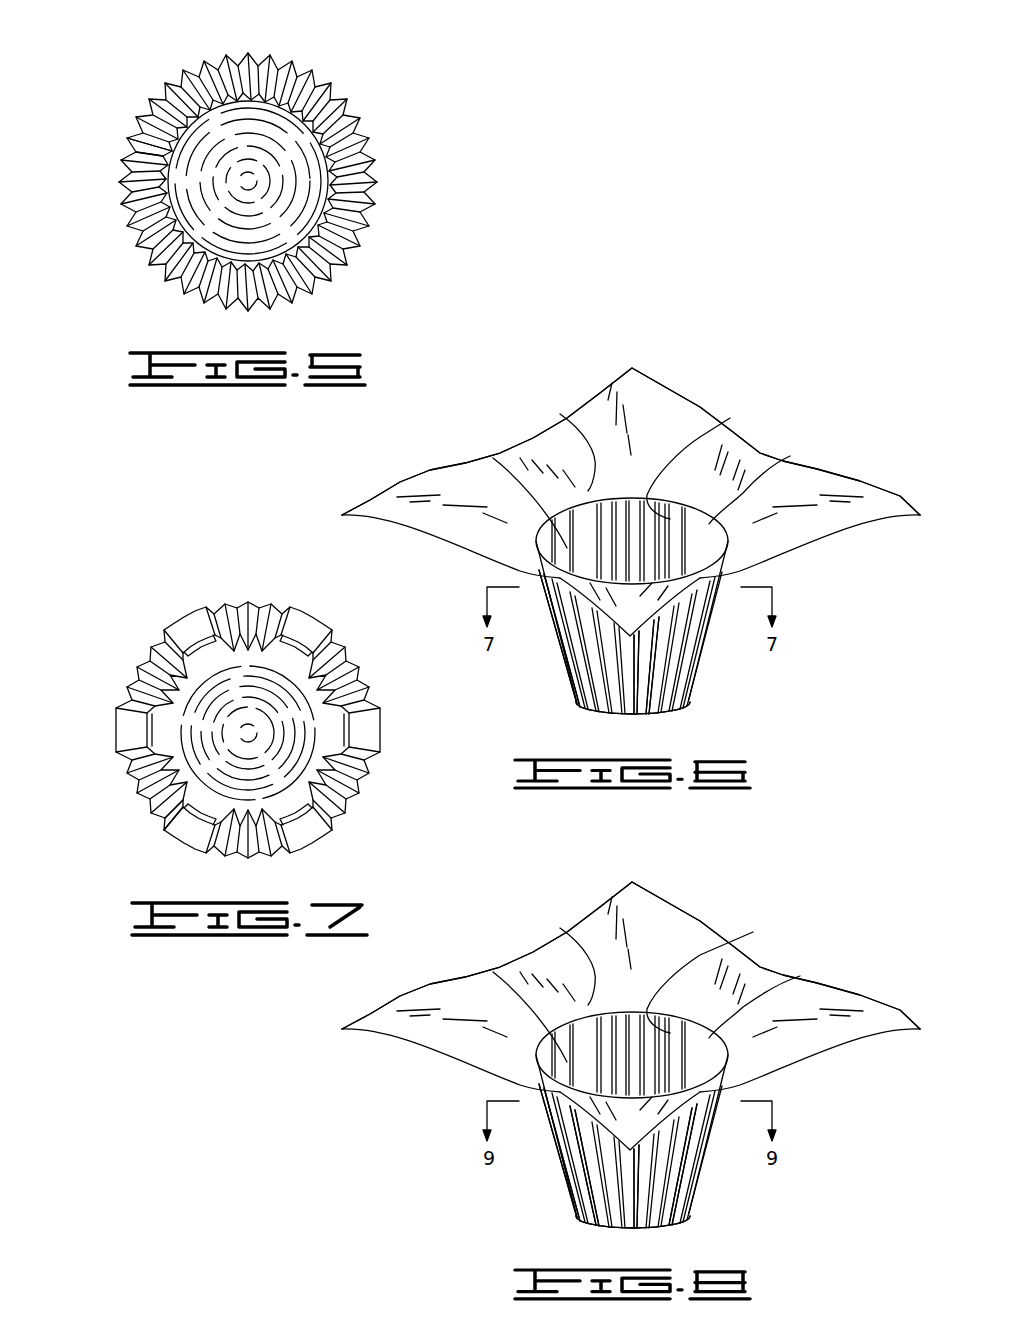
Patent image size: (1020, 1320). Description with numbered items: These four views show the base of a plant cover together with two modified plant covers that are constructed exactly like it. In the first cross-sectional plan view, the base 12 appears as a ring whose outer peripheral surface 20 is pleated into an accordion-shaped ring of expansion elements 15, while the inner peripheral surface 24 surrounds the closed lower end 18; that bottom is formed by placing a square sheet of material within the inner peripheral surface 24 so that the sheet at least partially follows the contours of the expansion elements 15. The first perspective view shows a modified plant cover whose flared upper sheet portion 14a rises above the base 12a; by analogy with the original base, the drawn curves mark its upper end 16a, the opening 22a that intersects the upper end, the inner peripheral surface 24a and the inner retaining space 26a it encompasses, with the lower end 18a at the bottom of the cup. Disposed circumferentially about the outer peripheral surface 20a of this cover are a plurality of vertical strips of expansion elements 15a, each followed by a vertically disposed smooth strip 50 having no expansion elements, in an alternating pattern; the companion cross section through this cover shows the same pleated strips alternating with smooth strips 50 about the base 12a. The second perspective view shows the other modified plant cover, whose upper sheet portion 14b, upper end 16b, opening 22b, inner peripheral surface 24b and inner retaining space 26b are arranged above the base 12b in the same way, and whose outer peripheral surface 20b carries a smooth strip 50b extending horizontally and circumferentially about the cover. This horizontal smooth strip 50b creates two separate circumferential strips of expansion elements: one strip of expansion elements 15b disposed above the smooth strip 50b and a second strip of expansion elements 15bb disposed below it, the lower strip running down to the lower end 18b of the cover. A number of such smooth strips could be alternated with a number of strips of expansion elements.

In FIG. 5, the base 12 is at (176, 60).
In FIG. 5, the expansion elements 15 is at (333, 82).
In FIG. 5, the lower end 18 is at (250, 60).
In FIG. 5, the outer peripheral surface 20 is at (120, 160).
In FIG. 5, the inner peripheral surface 24 is at (128, 215).
In FIG. 7, the baking cup 12a is at (141, 645).
In FIG. 6, the baking cup 12a is at (714, 640).
In FIG. 7, the pleats 15a is at (258, 601).
In FIG. 6, the pleats 15a is at (651, 709).
In FIG. 7, the smooth strip 50 is at (310, 627).
In FIG. 6, the smooth strip 50 is at (669, 686).
In FIG. 7, the outer peripheral surface 20a is at (117, 733).
In FIG. 6, the outer peripheral surface 20a is at (574, 673).
In FIG. 7, the fold line 24a is at (185, 830).
In FIG. 6, the fold line 24a is at (730, 418).
In FIG. 6, the wrapper sheet 14a is at (709, 408).
In FIG. 6, the fold line 16a is at (560, 414).
In FIG. 6, the fold line 26a is at (493, 458).
In FIG. 6, the fold line 22a is at (790, 456).
In FIG. 6, the bottom rim 18a is at (581, 705).
In FIG. 8, the baking cup 12b is at (714, 1152).
In FIG. 8, the wrapper sheet 14b is at (768, 963).
In FIG. 8, the fold line 16b is at (560, 928).
In FIG. 8, the fold line 26b is at (493, 972).
In FIG. 8, the fold line 24b is at (753, 932).
In FIG. 8, the fold line 22b is at (800, 976).
In FIG. 8, the expansion elements 15b is at (705, 1106).
In FIG. 8, the smooth strip 50b is at (574, 1157).
In FIG. 8, the bottom wall 20b is at (577, 1204).
In FIG. 8, the bottom rim 18b is at (579, 1219).
In FIG. 8, the expansion elements 15bb is at (667, 1198).